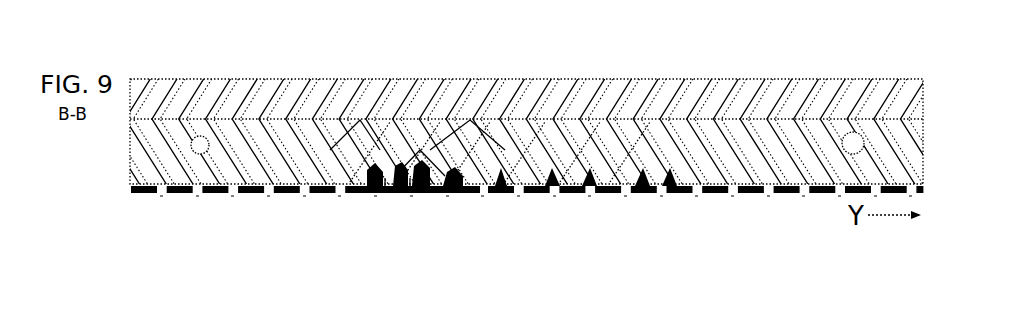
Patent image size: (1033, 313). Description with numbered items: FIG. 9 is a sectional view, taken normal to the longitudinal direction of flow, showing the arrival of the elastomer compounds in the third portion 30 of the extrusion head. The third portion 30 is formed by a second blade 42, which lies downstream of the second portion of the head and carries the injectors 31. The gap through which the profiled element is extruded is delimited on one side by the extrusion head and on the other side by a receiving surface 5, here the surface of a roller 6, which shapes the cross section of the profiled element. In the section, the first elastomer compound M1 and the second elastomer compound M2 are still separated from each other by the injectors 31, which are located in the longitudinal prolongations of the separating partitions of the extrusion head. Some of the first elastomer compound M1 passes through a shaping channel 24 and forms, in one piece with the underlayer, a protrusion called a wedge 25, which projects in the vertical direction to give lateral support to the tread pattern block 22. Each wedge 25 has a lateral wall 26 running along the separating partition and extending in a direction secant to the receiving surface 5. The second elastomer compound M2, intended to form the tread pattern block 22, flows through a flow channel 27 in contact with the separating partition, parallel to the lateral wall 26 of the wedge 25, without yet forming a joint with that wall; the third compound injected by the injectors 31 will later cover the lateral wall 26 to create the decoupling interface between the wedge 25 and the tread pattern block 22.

The receiving surface 5 is at (490, 208).
The roller 6 is at (163, 190).
The tread pattern block 22 is at (620, 173).
The shaping channel 24 is at (407, 162).
The wedge 25 is at (407, 188).
The lateral wall 26 is at (372, 168).
The flow channel 27 is at (465, 153).
The third portion of the extrusion head 30 is at (140, 232).
The injector 31 is at (378, 190).
The second blade 42 is at (147, 150).
The first elastomer compound M1 is at (536, 224).
The second elastomer compound M2 is at (510, 158).